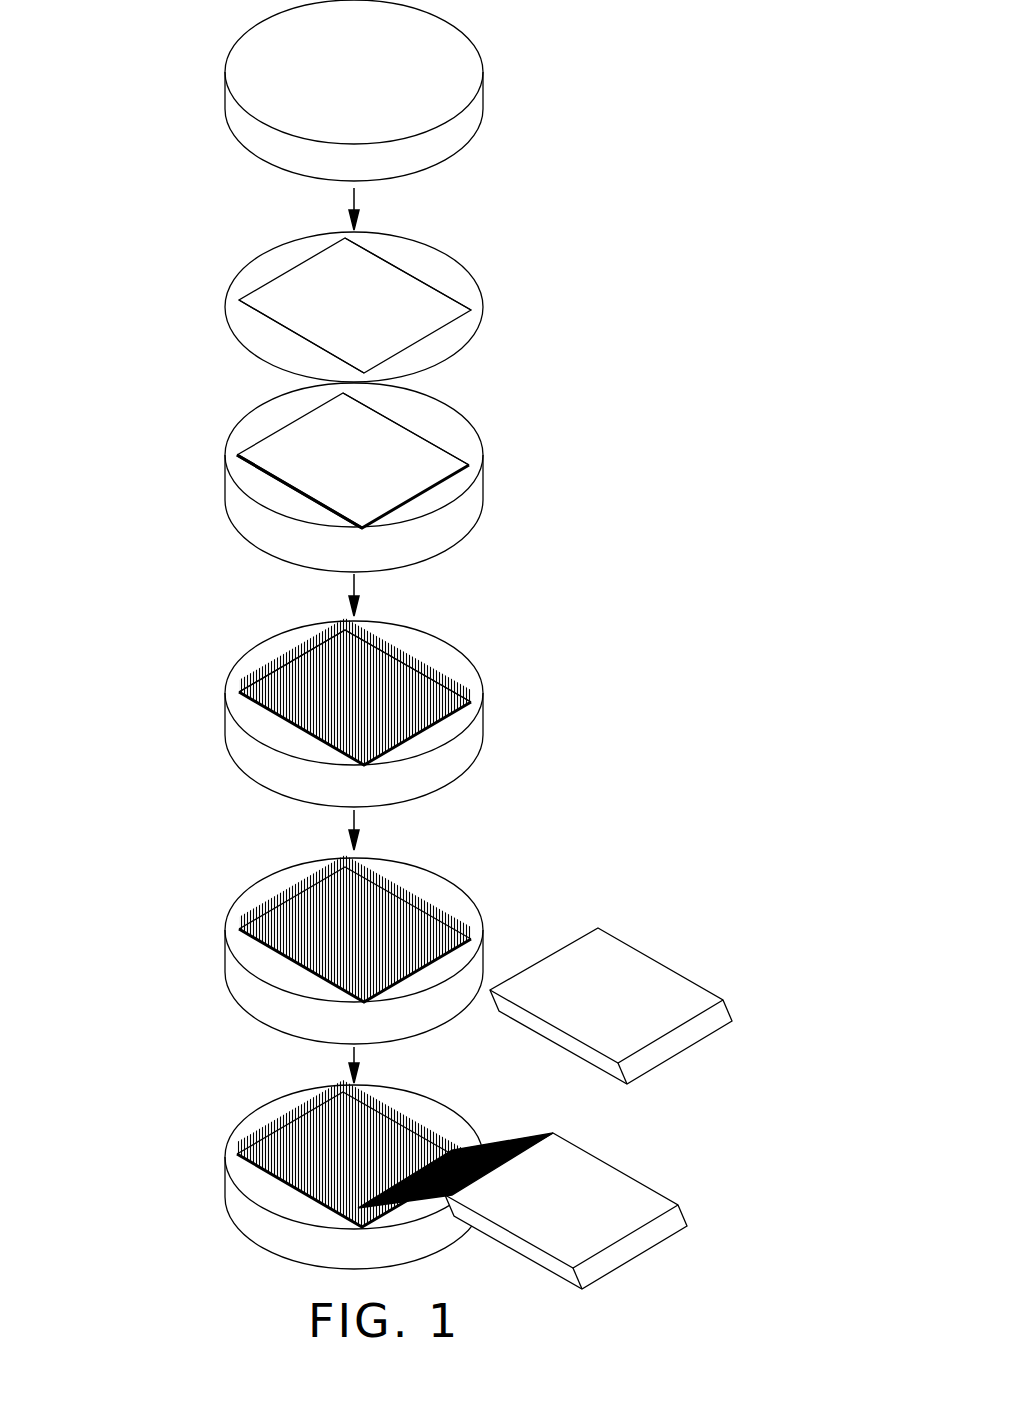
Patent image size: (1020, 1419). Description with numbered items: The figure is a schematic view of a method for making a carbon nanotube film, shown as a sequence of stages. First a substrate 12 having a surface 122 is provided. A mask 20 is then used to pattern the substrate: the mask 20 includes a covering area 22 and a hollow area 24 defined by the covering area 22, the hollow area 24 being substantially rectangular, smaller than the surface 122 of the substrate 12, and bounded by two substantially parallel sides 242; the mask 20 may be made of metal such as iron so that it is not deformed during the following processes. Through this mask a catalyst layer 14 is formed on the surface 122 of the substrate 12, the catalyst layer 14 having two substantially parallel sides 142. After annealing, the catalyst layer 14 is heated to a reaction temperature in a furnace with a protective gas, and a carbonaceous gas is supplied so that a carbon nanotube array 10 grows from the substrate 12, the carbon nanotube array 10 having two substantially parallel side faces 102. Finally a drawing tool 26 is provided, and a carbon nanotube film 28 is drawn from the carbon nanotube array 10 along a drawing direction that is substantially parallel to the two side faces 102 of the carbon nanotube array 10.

The carbon nanotube array 10 is at (433, 667).
The side faces 102 is at (388, 645).
The substrate 12 is at (510, 86).
The surface 122 is at (252, 62).
The catalyst layer 14 is at (403, 463).
The sides 142 is at (390, 418).
The mask 20 is at (346, 284).
The covering area 22 is at (258, 272).
The hollow area 24 is at (410, 312).
The sides 242 is at (383, 258).
The drawing tool 26 is at (637, 975).
The carbon nanotube film 28 is at (500, 1138).